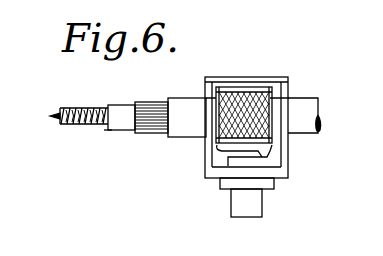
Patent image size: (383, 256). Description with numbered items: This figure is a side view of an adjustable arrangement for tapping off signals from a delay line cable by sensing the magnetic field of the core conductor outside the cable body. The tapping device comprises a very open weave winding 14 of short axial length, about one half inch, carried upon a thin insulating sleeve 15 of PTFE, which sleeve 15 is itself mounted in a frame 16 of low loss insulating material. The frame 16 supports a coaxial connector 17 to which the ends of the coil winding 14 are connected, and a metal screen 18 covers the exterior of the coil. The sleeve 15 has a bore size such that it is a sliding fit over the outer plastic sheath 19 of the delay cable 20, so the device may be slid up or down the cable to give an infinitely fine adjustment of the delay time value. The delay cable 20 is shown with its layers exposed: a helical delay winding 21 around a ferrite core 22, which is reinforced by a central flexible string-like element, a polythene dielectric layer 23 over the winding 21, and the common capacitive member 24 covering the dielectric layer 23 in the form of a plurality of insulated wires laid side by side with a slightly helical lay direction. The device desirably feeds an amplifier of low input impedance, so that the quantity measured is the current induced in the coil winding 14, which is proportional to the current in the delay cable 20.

The open weave winding 14 is at (253, 93).
The insulating sleeve 15 is at (281, 86).
The frame 16 is at (288, 158).
The coaxial connector 17 is at (237, 197).
The metal screen 18 is at (218, 76).
The outer plastic sheath 19 is at (191, 118).
The delay cable 20 is at (332, 117).
The helical delay winding 21 is at (81, 107).
The ferrite core 22 is at (60, 126).
The polythene dielectric layer 23 is at (121, 118).
The common capacitive member 24 is at (153, 134).